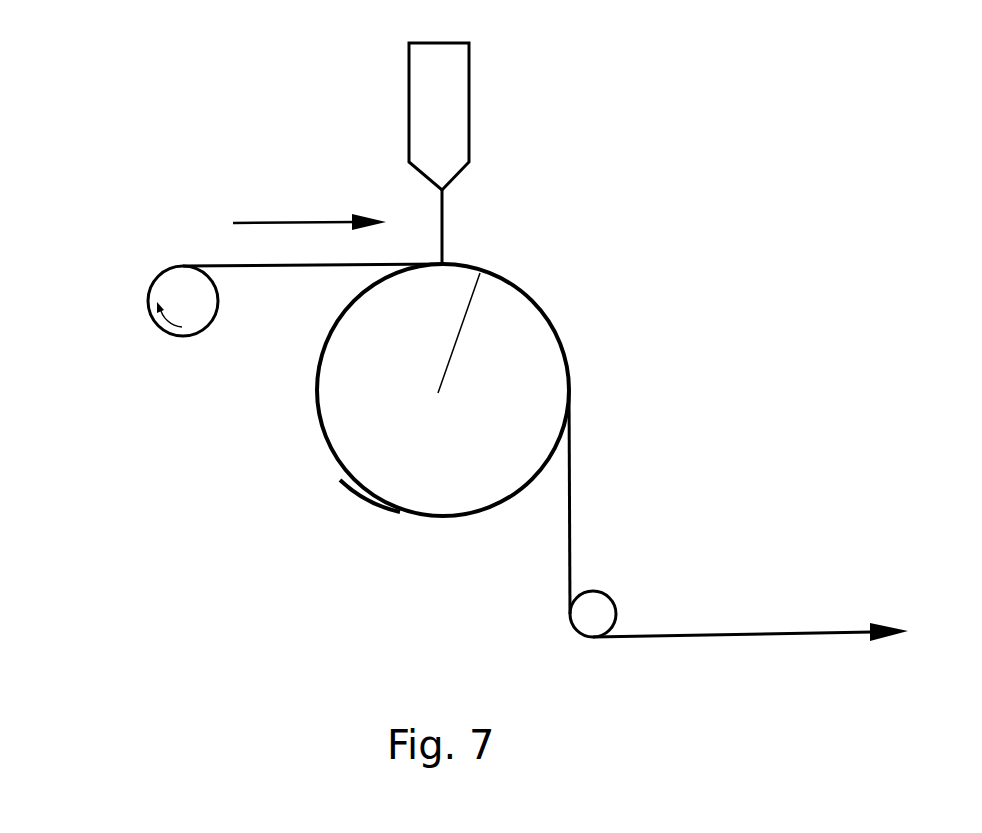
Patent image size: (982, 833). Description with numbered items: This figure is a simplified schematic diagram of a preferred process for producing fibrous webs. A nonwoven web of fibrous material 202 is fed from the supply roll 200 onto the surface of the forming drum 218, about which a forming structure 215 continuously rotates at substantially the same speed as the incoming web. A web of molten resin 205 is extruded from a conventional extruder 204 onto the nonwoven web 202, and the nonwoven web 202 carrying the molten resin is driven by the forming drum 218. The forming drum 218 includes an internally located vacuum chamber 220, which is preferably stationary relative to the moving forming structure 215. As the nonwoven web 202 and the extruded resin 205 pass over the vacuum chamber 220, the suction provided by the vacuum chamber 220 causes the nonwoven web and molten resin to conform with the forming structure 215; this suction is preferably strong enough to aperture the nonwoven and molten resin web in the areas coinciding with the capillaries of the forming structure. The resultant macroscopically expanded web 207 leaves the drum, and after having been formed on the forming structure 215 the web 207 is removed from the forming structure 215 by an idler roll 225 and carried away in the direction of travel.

The supply roll 200 is at (157, 328).
The nonwoven web of fibrous material 202 is at (332, 266).
The extruder 204 is at (448, 77).
The web of molten resin 205 is at (445, 213).
The macroscopically expanded web 207 is at (572, 510).
The forming structure 215 is at (446, 517).
The forming drum 218 is at (385, 470).
The vacuum chamber 220 is at (558, 347).
The idler roll 225 is at (597, 610).